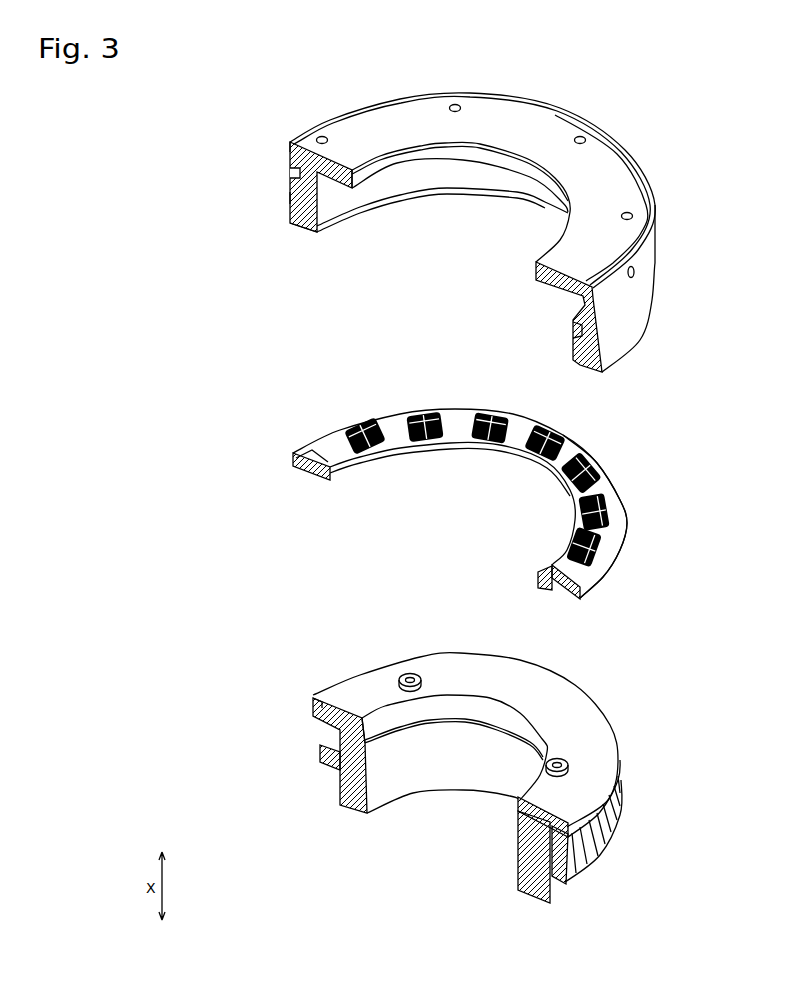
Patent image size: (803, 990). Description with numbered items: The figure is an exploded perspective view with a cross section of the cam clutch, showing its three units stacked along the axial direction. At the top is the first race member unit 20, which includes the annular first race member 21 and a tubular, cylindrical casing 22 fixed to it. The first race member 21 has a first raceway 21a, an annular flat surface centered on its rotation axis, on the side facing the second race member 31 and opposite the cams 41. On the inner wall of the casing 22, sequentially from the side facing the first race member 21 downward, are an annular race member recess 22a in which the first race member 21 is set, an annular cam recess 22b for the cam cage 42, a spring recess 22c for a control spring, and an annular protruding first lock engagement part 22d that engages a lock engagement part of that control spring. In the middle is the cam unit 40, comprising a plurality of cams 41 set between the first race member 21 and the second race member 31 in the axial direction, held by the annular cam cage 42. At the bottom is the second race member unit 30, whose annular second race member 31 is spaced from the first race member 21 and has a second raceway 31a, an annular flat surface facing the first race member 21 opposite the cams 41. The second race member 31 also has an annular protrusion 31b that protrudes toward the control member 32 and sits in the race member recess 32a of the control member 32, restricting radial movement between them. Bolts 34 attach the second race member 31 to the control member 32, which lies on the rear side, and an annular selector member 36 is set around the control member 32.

The first race member unit 20 is at (282, 99).
The first race member 21 is at (432, 118).
The first raceway 21a is at (651, 223).
The casing 22 is at (643, 293).
The race member recess 22a is at (290, 146).
The cam recess 22b is at (290, 173).
The spring recess 22c is at (290, 198).
The first lock engagement part 22d is at (318, 232).
The cam unit 40 is at (282, 418).
The cams 41 is at (595, 470).
The cam cage 42 is at (613, 490).
The second race member unit 30 is at (282, 662).
The second race member 31 is at (593, 721).
The second raceway 31a is at (547, 682).
The annular protrusion 31b is at (320, 709).
The control member 32 is at (522, 863).
The race member recess 32a is at (323, 743).
The bolts 34 is at (407, 672).
The selector member 36 is at (560, 887).